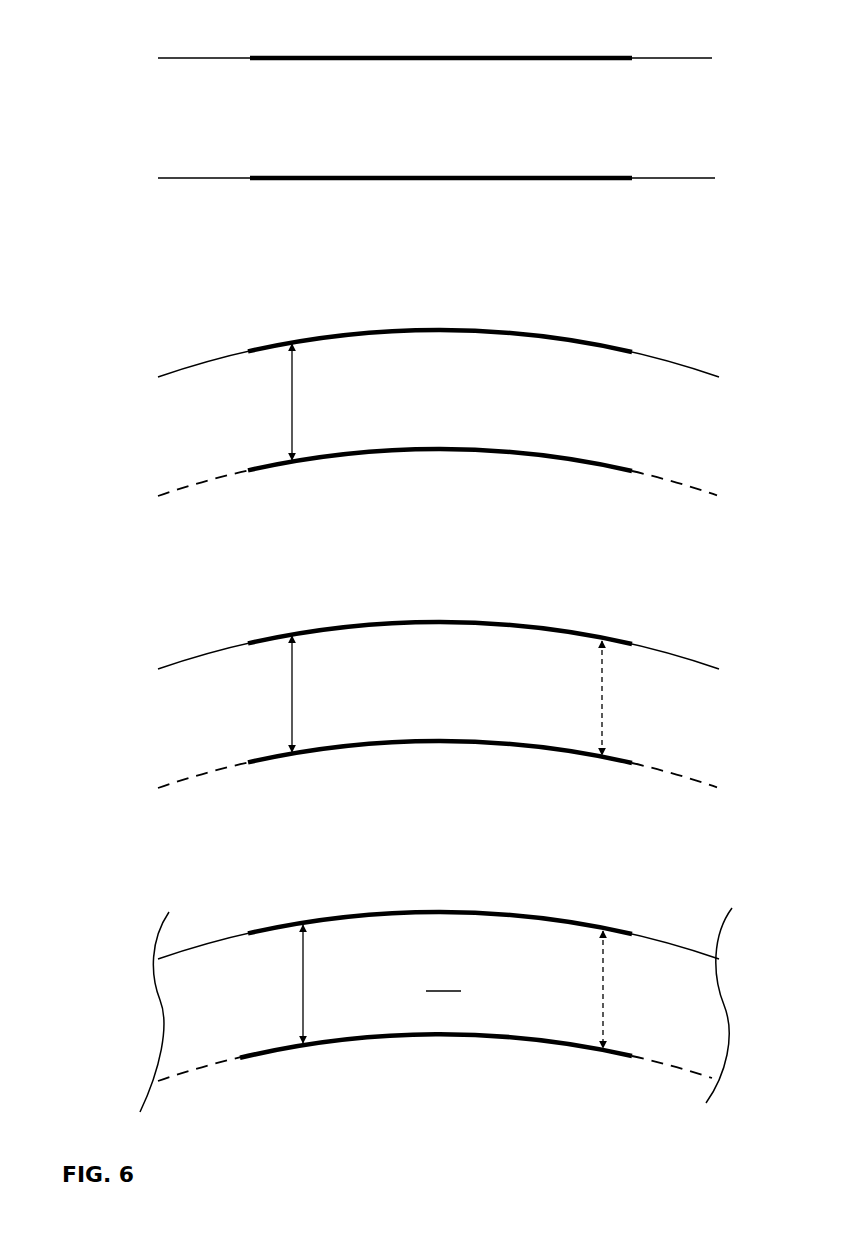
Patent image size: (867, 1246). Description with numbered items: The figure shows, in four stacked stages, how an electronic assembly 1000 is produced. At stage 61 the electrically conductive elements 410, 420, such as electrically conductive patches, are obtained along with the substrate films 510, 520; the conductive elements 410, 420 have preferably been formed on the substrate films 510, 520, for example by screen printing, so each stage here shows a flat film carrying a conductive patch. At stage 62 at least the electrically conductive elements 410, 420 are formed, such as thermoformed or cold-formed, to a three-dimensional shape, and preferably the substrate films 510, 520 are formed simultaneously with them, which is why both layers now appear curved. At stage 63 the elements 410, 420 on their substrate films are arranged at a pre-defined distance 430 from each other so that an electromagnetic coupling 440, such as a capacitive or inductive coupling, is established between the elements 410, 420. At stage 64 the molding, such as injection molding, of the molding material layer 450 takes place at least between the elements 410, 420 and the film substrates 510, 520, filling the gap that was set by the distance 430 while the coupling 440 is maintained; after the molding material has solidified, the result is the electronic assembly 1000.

The obtaining stage 61 is at (112, 63).
The forming stage 62 is at (113, 369).
The arranging stage 63 is at (113, 670).
The molding stage 64 is at (115, 979).
The electronic assembly 1000 is at (266, 888).
The electrically conductive element 410 is at (446, 57).
The electrically conductive element 420 is at (437, 180).
The pre-defined distance 430 is at (289, 410).
The electromagnetic coupling 440 is at (599, 700).
The molding material layer 450 is at (440, 990).
The substrate film 510 is at (676, 57).
The substrate film 520 is at (677, 180).